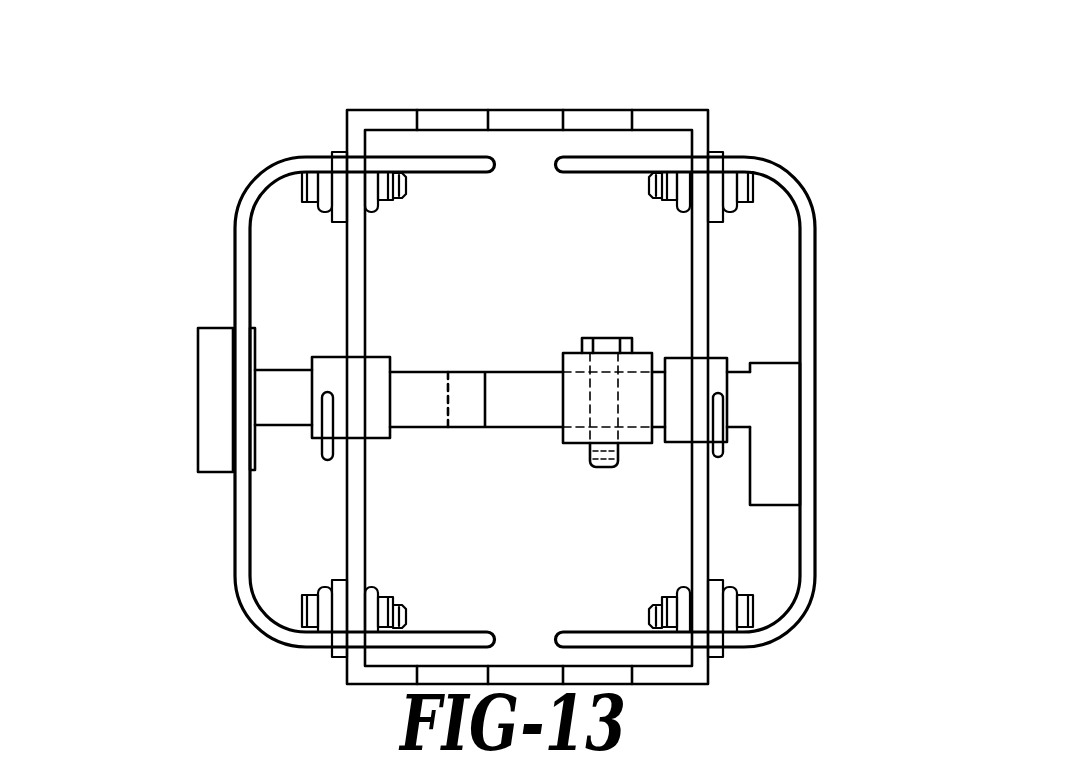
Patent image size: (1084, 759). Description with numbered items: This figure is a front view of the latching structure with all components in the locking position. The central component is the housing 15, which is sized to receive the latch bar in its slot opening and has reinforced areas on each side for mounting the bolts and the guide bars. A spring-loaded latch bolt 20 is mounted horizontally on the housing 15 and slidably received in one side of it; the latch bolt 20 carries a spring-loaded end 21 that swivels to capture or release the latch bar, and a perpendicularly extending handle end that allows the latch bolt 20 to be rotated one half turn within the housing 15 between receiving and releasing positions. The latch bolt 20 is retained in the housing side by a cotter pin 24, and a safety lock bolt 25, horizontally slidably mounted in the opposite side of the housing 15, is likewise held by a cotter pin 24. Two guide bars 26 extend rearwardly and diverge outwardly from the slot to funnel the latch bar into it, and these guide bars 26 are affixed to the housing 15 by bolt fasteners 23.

The housing 15 is at (368, 108).
The spring-loaded latch bolt 20 is at (765, 363).
The spring-loaded end 21 is at (525, 370).
The bolt fasteners 23 is at (620, 338).
The cotter pin 24 is at (320, 455).
The safety lock bolt 25 is at (208, 327).
The guide bars 26 is at (240, 602).